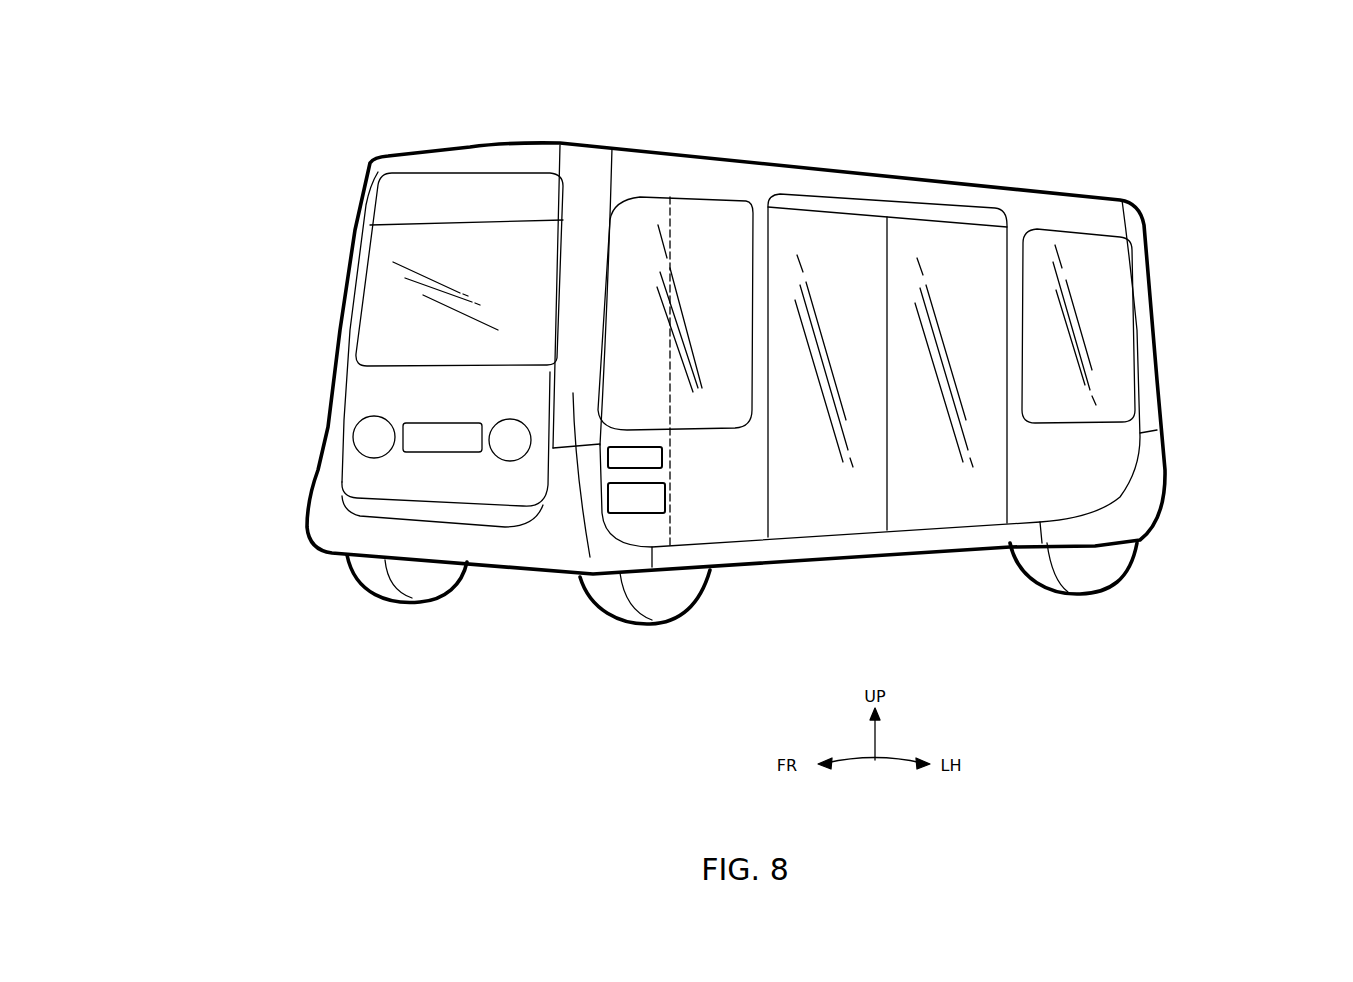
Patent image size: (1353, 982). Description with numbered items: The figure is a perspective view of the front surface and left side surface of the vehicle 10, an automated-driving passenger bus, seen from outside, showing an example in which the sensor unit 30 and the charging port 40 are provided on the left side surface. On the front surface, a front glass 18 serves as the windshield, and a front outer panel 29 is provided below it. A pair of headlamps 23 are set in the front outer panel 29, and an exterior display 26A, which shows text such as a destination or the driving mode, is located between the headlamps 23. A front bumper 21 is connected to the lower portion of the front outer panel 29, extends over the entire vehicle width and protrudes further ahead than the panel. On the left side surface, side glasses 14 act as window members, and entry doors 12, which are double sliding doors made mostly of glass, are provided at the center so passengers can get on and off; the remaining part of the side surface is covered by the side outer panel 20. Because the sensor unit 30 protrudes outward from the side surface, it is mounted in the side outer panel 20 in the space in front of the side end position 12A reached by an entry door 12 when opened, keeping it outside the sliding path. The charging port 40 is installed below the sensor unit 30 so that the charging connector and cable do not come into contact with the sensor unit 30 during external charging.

The vehicle 10 is at (247, 170).
The entry door 12 is at (845, 260).
The side end position 12A is at (662, 392).
The side glass 14 is at (708, 245).
The front glass 18 is at (370, 315).
The side outer panel 20 is at (1107, 483).
The front bumper 21 is at (437, 552).
The headlamp 23 is at (371, 437).
The exterior display 26A is at (438, 437).
The front outer panel 29 is at (383, 487).
The sensor unit 30 is at (643, 459).
The charging port 40 is at (643, 500).